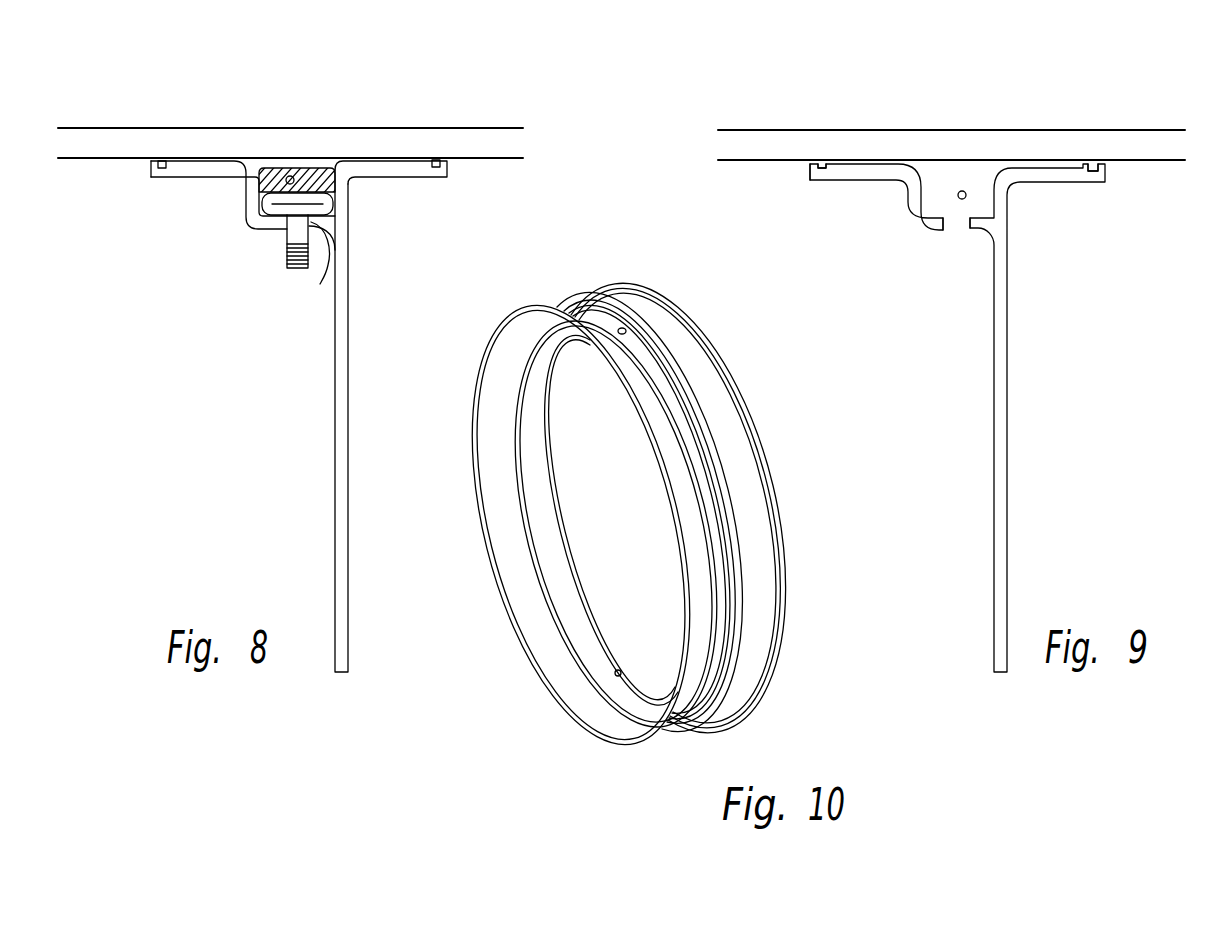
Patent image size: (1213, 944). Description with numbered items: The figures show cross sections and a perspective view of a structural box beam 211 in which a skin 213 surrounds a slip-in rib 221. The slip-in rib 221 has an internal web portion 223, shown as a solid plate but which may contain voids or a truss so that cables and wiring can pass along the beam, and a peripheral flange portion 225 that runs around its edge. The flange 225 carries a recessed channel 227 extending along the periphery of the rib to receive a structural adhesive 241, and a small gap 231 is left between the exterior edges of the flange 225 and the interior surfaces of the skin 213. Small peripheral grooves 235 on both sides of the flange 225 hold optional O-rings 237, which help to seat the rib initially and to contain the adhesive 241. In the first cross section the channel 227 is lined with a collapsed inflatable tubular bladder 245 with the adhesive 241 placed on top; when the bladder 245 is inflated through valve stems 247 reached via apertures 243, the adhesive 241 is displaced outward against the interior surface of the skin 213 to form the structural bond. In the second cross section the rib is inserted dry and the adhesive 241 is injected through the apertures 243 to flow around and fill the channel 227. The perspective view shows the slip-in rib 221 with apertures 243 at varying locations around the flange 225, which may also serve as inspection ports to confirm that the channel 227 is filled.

In FIG. 8, the structural box beam 211 is at (254, 96).
In FIG. 9, the structural box beam 211 is at (958, 104).
In FIG. 8, the skin 213 is at (105, 160).
In FIG. 9, the skin 213 is at (729, 162).
In FIG. 10, the slip-in rib 221 is at (627, 525).
In FIG. 8, the internal web portion 223 is at (348, 492).
In FIG. 9, the internal web portion 223 is at (1008, 491).
In FIG. 10, the internal web portion 223 is at (592, 525).
In FIG. 8, the peripheral flange portion 225 is at (333, 384).
In FIG. 9, the peripheral flange portion 225 is at (952, 384).
In FIG. 10, the peripheral flange portion 225 is at (696, 336).
In FIG. 8, the recessed channel 227 is at (307, 135).
In FIG. 9, the recessed channel 227 is at (965, 190).
In FIG. 10, the recessed channel 227 is at (728, 476).
In FIG. 8, the gap 231 is at (452, 168).
In FIG. 9, the gap 231 is at (798, 168).
In FIG. 9, the peripheral grooves 235 is at (823, 150).
In FIG. 8, the O-rings 237 is at (164, 150).
In FIG. 8, the structural adhesive 241 is at (290, 174).
In FIG. 8, the apertures 243 is at (320, 284).
In FIG. 9, the apertures 243 is at (955, 234).
In FIG. 10, the apertures 243 is at (605, 337).
In FIG. 8, the inflatable tubular bladder 245 is at (280, 204).
In FIG. 8, the valve stems 247 is at (276, 257).